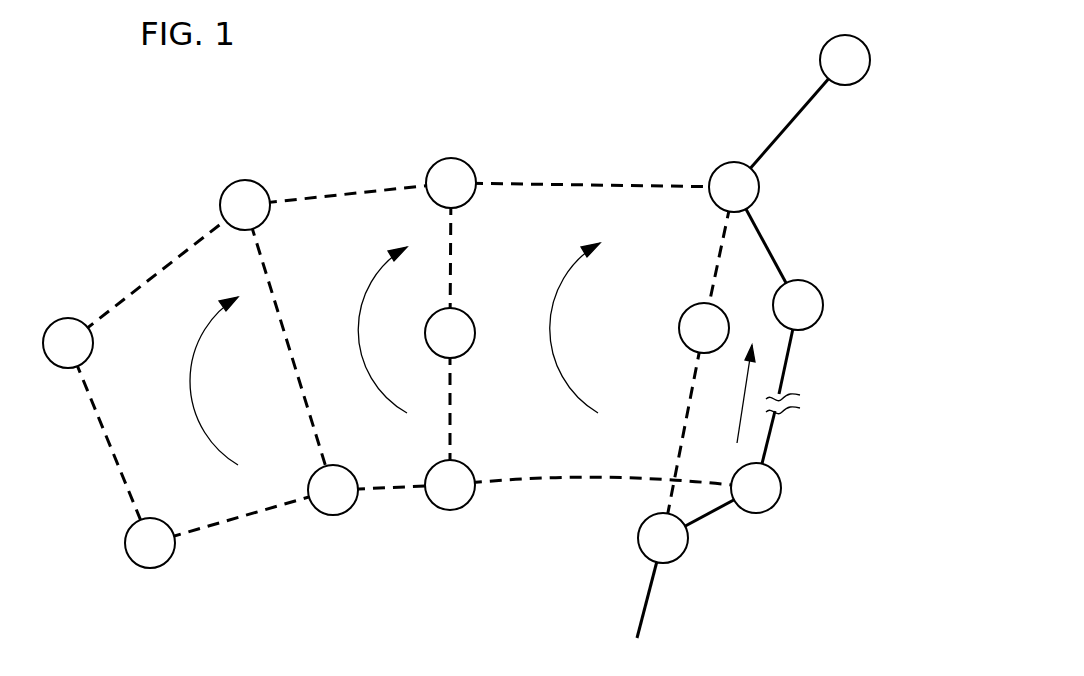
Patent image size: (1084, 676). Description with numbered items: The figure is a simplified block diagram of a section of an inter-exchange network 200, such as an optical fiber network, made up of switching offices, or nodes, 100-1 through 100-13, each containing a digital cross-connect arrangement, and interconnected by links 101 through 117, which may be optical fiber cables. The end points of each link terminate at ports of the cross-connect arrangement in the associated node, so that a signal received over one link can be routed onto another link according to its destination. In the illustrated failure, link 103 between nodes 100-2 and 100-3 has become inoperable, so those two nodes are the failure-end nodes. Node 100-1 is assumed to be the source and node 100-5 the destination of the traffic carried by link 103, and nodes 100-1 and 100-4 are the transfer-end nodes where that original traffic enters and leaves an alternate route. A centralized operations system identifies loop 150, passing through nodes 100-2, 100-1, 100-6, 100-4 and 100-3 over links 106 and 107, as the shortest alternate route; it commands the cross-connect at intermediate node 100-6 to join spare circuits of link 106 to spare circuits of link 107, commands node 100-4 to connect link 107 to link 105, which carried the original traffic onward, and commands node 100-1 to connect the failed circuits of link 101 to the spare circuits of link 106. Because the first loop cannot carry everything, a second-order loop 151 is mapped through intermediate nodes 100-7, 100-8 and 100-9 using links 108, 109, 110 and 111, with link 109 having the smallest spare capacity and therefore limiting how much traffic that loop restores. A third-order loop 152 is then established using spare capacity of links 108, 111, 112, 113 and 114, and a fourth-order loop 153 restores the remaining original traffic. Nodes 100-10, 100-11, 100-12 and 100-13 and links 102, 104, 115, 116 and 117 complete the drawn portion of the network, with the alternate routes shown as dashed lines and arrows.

The inter-exchange network 200 is at (426, 615).
The switching office 100-1 is at (638, 535).
The switching office 100-2 is at (775, 513).
The switching office 100-3 is at (818, 297).
The switching office 100-4 is at (728, 165).
The switching office 100-5 is at (820, 55).
The switching office 100-6 is at (683, 320).
The switching office 100-7 is at (452, 510).
The switching office 100-8 is at (455, 357).
The switching office 100-9 is at (440, 160).
The switching office 100-10 is at (338, 517).
The switching office 100-11 is at (243, 180).
The switching office 100-12 is at (165, 520).
The switching office 100-13 is at (93, 345).
The link 101 is at (653, 607).
The link 102 is at (715, 520).
The inoperable link 103 is at (777, 435).
The link 104 is at (768, 218).
The link 105 is at (788, 125).
The link 106 is at (687, 405).
The link 107 is at (723, 250).
The link 108 is at (582, 475).
The link 109 is at (453, 428).
The link 110 is at (452, 260).
The link 111 is at (582, 182).
The link 112 is at (398, 487).
The link 113 is at (285, 310).
The link 114 is at (345, 190).
The link 115 is at (250, 515).
The link 116 is at (108, 437).
The link 117 is at (185, 247).
The first-order connectivity loop 150 is at (738, 420).
The second-order connectivity loop 151 is at (552, 345).
The third-order connectivity loop 152 is at (360, 347).
The fourth-order connectivity loop 153 is at (192, 397).